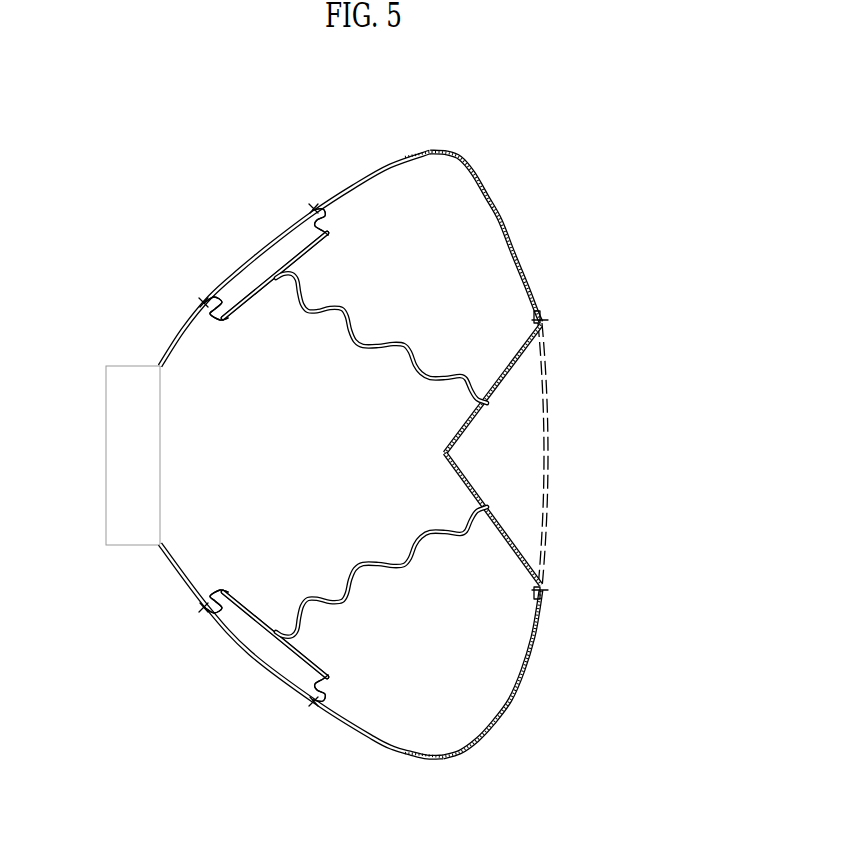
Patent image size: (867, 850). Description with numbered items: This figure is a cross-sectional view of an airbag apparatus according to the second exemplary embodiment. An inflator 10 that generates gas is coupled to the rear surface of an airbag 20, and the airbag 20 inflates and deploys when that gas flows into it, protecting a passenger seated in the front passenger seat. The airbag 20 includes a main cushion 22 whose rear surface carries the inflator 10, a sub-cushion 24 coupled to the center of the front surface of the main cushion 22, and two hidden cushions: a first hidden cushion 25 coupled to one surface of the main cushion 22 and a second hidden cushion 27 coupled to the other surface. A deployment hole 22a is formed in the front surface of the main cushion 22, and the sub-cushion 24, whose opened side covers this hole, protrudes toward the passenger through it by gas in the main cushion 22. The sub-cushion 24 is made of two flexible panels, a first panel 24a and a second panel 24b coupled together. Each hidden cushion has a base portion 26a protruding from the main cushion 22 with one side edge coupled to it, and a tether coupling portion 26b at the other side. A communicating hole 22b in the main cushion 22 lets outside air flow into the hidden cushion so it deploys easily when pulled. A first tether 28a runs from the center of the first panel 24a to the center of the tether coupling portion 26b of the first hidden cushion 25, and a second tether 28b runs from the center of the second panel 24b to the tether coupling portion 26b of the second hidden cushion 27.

The inflator 10 is at (108, 366).
The airbag 20 is at (472, 151).
The main cushion 22 is at (384, 454).
The deployment hole 22a is at (552, 368).
The communicating hole 22b is at (253, 255).
The sub-cushion 24 is at (553, 455).
The first panel 24a is at (507, 533).
The second panel 24b is at (493, 396).
The first hidden cushion 25 is at (307, 755).
The base portion 26a is at (313, 208).
The tether coupling portion 26b is at (297, 256).
The second hidden cushion 27 is at (307, 155).
The first tether 28a is at (383, 568).
The second tether 28b is at (400, 340).